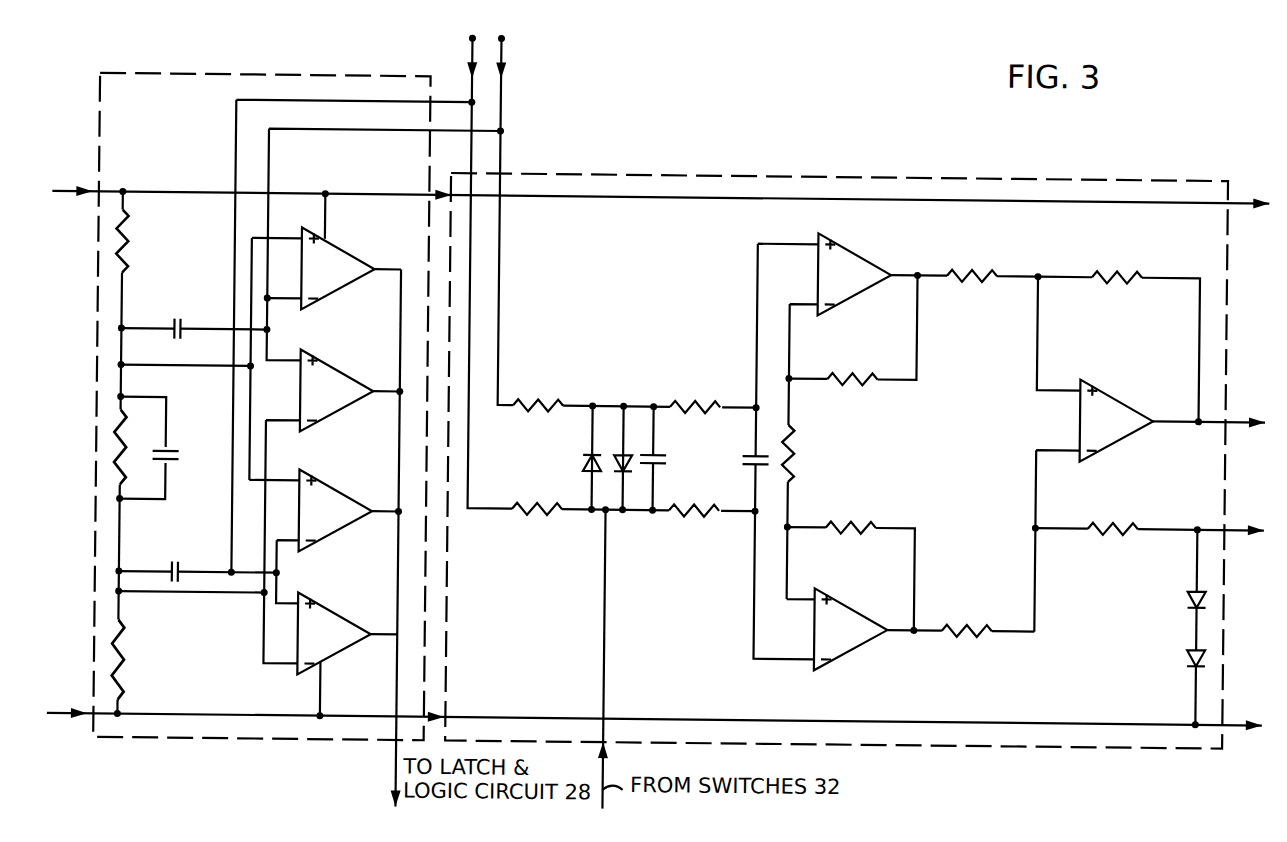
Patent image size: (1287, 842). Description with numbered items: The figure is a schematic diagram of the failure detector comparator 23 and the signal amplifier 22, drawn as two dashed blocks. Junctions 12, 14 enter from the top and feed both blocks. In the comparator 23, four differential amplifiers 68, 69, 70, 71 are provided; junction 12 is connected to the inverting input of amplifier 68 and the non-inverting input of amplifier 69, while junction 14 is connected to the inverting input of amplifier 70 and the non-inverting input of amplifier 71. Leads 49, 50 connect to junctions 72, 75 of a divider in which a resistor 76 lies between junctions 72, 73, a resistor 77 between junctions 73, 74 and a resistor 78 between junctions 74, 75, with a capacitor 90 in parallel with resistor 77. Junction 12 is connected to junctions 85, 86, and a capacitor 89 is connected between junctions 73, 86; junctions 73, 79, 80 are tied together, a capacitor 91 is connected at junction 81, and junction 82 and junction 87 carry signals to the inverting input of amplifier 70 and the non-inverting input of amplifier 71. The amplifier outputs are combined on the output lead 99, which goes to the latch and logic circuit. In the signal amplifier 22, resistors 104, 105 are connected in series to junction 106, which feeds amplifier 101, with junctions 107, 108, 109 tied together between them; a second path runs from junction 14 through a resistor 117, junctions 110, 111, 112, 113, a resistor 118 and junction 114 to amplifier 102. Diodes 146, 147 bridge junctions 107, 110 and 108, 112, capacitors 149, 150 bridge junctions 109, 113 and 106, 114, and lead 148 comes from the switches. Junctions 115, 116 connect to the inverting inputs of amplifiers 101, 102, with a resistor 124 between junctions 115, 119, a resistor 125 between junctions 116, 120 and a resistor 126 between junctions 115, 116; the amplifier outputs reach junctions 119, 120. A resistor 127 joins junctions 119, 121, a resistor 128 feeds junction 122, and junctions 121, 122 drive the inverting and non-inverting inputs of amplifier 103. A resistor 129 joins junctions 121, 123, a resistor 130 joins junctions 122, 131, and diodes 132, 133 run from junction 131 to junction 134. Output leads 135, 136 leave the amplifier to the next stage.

The junction 12 is at (500, 44).
The junction 14 is at (464, 40).
The signal amplifier 22 is at (1040, 746).
The comparator 23 is at (198, 745).
The lead 49 is at (68, 194).
The lead 50 is at (72, 711).
The differential amplifier 68 is at (344, 257).
The differential amplifier 69 is at (346, 380).
The differential amplifier 70 is at (344, 500).
The differential amplifier 71 is at (340, 621).
The junction 72 is at (122, 194).
The junction 73 is at (122, 332).
The junction 74 is at (124, 506).
The junction 75 is at (128, 717).
The resistor 76 is at (136, 252).
The resistor 77 is at (128, 457).
The resistor 78 is at (136, 667).
The junction 79 is at (122, 370).
The junction 80 is at (122, 402).
The junction 81 is at (122, 576).
The junction 82 is at (122, 600).
The junction 85 is at (269, 300).
The junction 86 is at (270, 334).
The junction 87 is at (286, 578).
The capacitor 89 is at (182, 330).
The capacitor 90 is at (176, 453).
The capacitor 91 is at (184, 576).
The output lead 99 is at (396, 776).
The differential amplifier 101 is at (856, 248).
The differential amplifier 102 is at (852, 656).
The differential amplifier 103 is at (1122, 442).
The resistor 104 is at (536, 402).
The resistor 105 is at (714, 404).
The junction 106 is at (754, 410).
The junction 107 is at (588, 404).
The junction 108 is at (624, 404).
The junction 109 is at (654, 404).
The junction 110 is at (586, 514).
The junction 111 is at (604, 514).
The junction 112 is at (623, 510).
The junction 113 is at (658, 512).
The junction 114 is at (756, 511).
The junction 115 is at (790, 376).
The junction 116 is at (790, 526).
The resistor 117 is at (522, 520).
The resistor 118 is at (706, 512).
The junction 119 is at (916, 272).
The junction 120 is at (914, 626).
The junction 121 is at (1037, 272).
The junction 122 is at (1034, 524).
The junction 123 is at (1190, 414).
The resistor 124 is at (874, 390).
The resistor 125 is at (876, 518).
The resistor 126 is at (796, 454).
The resistor 127 is at (965, 280).
The resistor 128 is at (968, 626).
The resistor 129 is at (1132, 273).
The resistor 130 is at (1112, 522).
The junction 131 is at (1196, 522).
The diode 132 is at (1186, 595).
The diode 133 is at (1186, 655).
The junction 134 is at (1194, 718).
The output lead 135 is at (1236, 416).
The output lead 136 is at (1236, 516).
The diode 146 is at (584, 466).
The diode 147 is at (622, 456).
The lead 148 is at (607, 644).
The capacitor 149 is at (668, 457).
The capacitor 150 is at (752, 464).